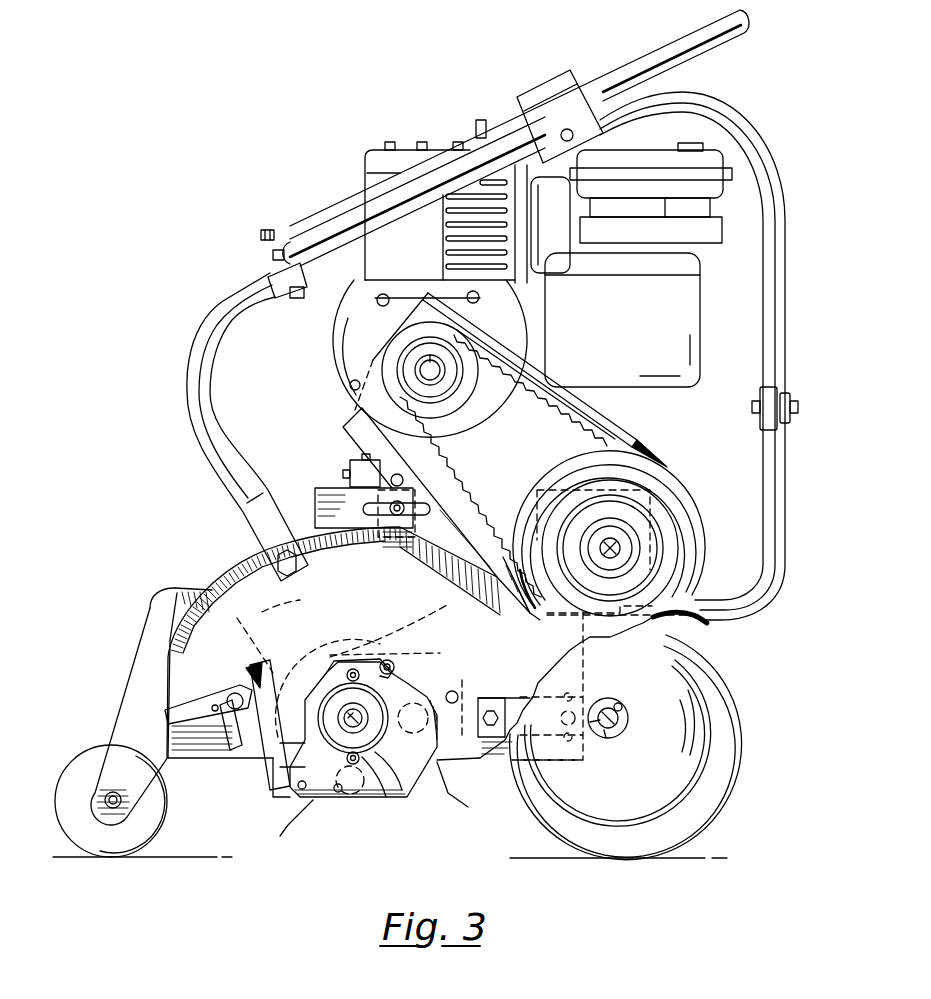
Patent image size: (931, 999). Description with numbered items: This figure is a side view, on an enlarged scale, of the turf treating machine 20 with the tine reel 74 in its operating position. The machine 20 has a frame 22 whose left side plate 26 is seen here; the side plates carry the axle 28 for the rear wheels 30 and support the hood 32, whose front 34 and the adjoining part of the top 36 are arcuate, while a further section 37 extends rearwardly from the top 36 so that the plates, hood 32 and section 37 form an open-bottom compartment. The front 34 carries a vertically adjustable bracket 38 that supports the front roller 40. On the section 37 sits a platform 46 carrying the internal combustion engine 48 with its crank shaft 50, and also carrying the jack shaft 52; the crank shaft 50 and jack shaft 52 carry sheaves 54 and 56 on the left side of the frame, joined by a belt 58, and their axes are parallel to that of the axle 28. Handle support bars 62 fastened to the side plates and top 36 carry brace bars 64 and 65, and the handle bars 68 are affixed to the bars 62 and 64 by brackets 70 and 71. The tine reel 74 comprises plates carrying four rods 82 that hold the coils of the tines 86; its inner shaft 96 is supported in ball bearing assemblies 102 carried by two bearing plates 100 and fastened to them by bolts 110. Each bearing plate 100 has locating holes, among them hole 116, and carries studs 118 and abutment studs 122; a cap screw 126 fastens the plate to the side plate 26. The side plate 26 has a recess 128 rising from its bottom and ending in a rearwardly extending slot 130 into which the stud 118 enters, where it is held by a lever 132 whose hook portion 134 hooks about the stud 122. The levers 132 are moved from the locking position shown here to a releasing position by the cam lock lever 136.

The machine 20 is at (468, 762).
The frame 22 is at (505, 620).
The left side plate 26 is at (183, 762).
The axle 28 is at (614, 714).
The rear wheels 30 is at (742, 747).
The hood 32 is at (240, 563).
The front 34 is at (213, 589).
The top 36 is at (304, 538).
The section 37 is at (584, 667).
The bracket 38 is at (150, 618).
The front roller 40 is at (84, 757).
The platform 46 is at (329, 487).
The internal combustion engine 48 is at (366, 160).
The crank shaft 50 is at (436, 378).
The jack shaft 52 is at (616, 545).
The sheave 54 is at (464, 385).
The sheave 56 is at (678, 490).
The belt 58 is at (560, 412).
The handle support bars 62 is at (786, 293).
The brace bar 64 is at (270, 262).
The brace bar 65 is at (788, 400).
The handle bars 68 is at (725, 36).
The bracket 70 is at (261, 238).
The bracket 71 is at (556, 78).
The tine reel 74 is at (310, 657).
The rods 82 is at (417, 703).
The tines 86 is at (420, 620).
The inner shaft 96 is at (358, 720).
The bearing plates 100 is at (387, 803).
The ball bearing assemblies 102 is at (398, 790).
The bolts 110 is at (346, 670).
The locating hole 116 is at (339, 792).
The studs 118 is at (396, 666).
The studs 122 is at (270, 763).
The cap screw 126 is at (455, 692).
The recess 128 is at (307, 789).
The slot 130 is at (372, 656).
The levers 132 is at (253, 748).
The hook portion 134 is at (287, 788).
The cam lock lever 136 is at (188, 710).